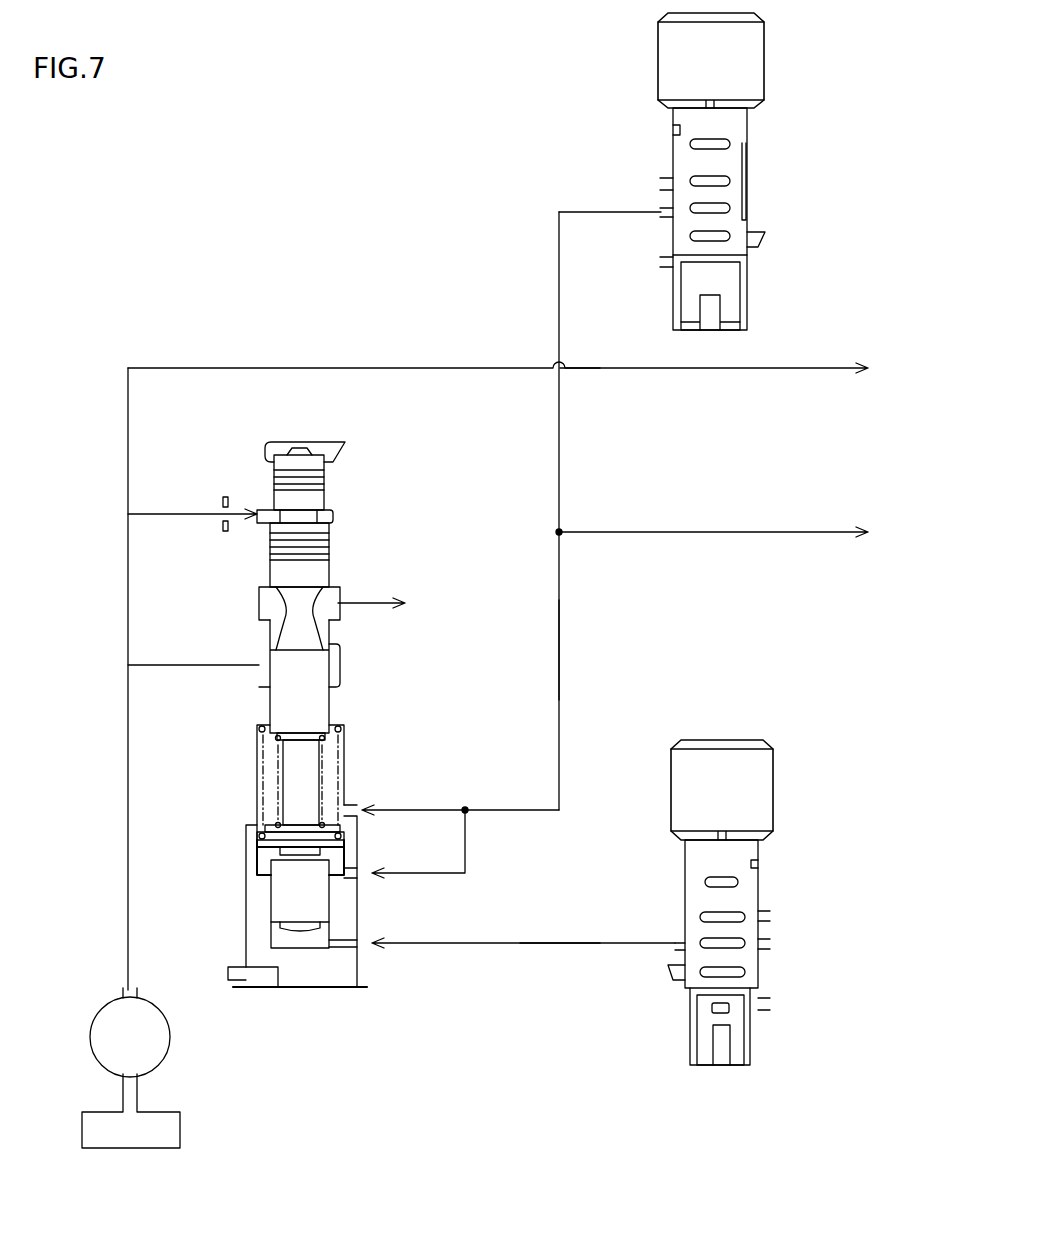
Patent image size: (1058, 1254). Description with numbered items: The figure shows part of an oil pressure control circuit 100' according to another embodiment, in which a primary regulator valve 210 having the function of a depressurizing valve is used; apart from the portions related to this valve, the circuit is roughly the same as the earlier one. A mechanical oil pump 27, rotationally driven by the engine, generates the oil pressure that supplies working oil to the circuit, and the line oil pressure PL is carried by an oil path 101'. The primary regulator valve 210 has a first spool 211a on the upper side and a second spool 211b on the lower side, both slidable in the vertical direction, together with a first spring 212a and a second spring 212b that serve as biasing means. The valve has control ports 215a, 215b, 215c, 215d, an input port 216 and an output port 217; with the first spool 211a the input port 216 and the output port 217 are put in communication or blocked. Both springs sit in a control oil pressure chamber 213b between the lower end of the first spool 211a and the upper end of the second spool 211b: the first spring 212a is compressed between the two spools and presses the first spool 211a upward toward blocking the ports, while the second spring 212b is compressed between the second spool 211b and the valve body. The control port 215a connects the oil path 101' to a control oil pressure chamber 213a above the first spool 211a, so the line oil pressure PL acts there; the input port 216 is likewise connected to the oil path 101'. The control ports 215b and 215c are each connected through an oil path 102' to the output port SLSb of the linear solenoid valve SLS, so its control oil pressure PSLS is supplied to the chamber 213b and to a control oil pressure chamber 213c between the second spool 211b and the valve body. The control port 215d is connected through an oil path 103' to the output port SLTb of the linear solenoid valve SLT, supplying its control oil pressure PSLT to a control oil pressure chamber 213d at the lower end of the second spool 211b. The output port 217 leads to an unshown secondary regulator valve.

The oil pressure control circuit 100' is at (343, 532).
The oil path 101' is at (516, 333).
The oil path 102' is at (614, 650).
The oil path 103' is at (560, 974).
The primary regulator valve 210 is at (306, 443).
The first spool 211a is at (320, 690).
The second spool 211b is at (320, 897).
The first spring 212a is at (325, 760).
The second spring 212b is at (343, 731).
The control oil pressure chamber 213a is at (260, 532).
The control oil pressure chamber 213b is at (263, 765).
The control oil pressure chamber 213c is at (263, 857).
The control oil pressure chamber 213d is at (285, 948).
The control port 215a is at (261, 492).
The control port 215b is at (369, 805).
The control port 215c is at (369, 829).
The control port 215d is at (375, 962).
The input port 216 is at (250, 690).
The output port 217 is at (353, 581).
The mechanical oil pump 27 is at (168, 1052).
The line oil pressure PL is at (498, 354).
The control oil pressure PSLS is at (712, 514).
The control oil pressure PSLT is at (523, 929).
The linear solenoid valve SLS is at (683, 78).
The linear solenoid valve SLT is at (695, 806).
The output port SLSb is at (659, 231).
The output port SLTb is at (682, 928).